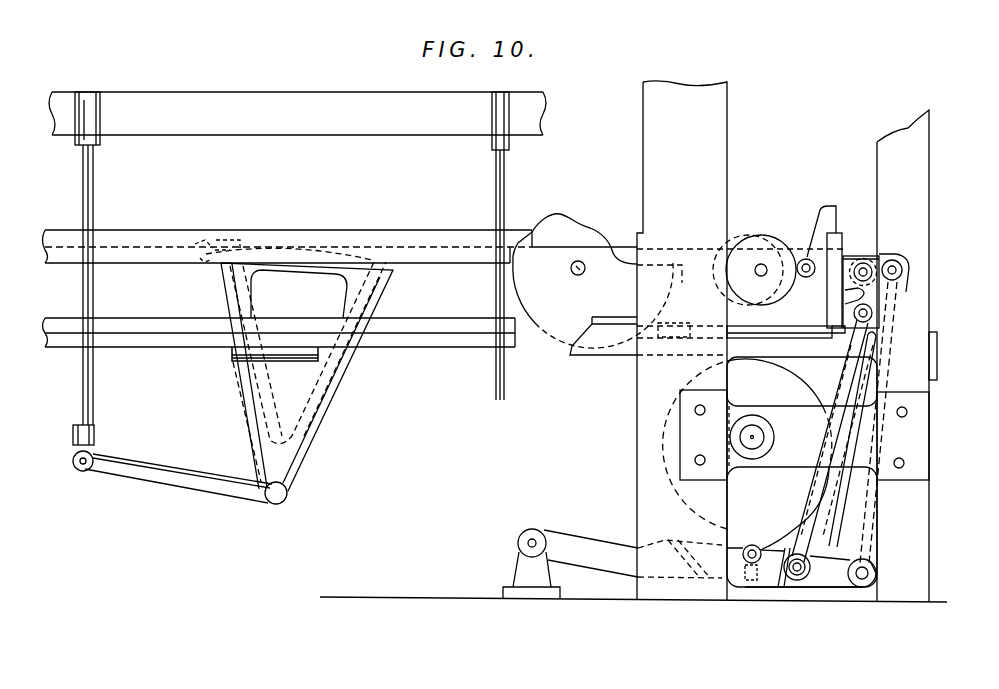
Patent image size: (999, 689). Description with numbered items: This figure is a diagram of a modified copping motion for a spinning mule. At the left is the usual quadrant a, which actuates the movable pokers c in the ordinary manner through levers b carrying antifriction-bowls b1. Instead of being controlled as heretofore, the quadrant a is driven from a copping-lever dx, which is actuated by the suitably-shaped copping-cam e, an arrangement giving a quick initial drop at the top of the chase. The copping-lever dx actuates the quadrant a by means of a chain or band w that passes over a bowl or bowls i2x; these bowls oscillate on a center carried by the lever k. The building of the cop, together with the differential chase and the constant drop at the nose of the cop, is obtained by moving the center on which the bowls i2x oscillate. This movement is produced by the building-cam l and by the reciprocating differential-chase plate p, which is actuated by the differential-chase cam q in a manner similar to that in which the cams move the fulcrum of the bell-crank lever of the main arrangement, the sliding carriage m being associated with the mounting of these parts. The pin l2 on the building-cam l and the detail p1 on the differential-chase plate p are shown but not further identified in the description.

The quadrant a is at (254, 298).
The lever b is at (212, 450).
The antifriction-bowl b1 is at (96, 452).
The movable poker c is at (95, 297).
The building-cam l is at (593, 284).
The cam pin l2 is at (574, 271).
The differential-chase cam q is at (741, 247).
The sliding carriage m is at (786, 272).
The differential-chase plate p is at (861, 274).
The bracket nub p1 is at (868, 296).
The bowl i2x is at (896, 262).
The chain or band w is at (892, 438).
The lever k is at (872, 393).
The copping-cam e is at (770, 473).
The copping-lever dx is at (786, 572).